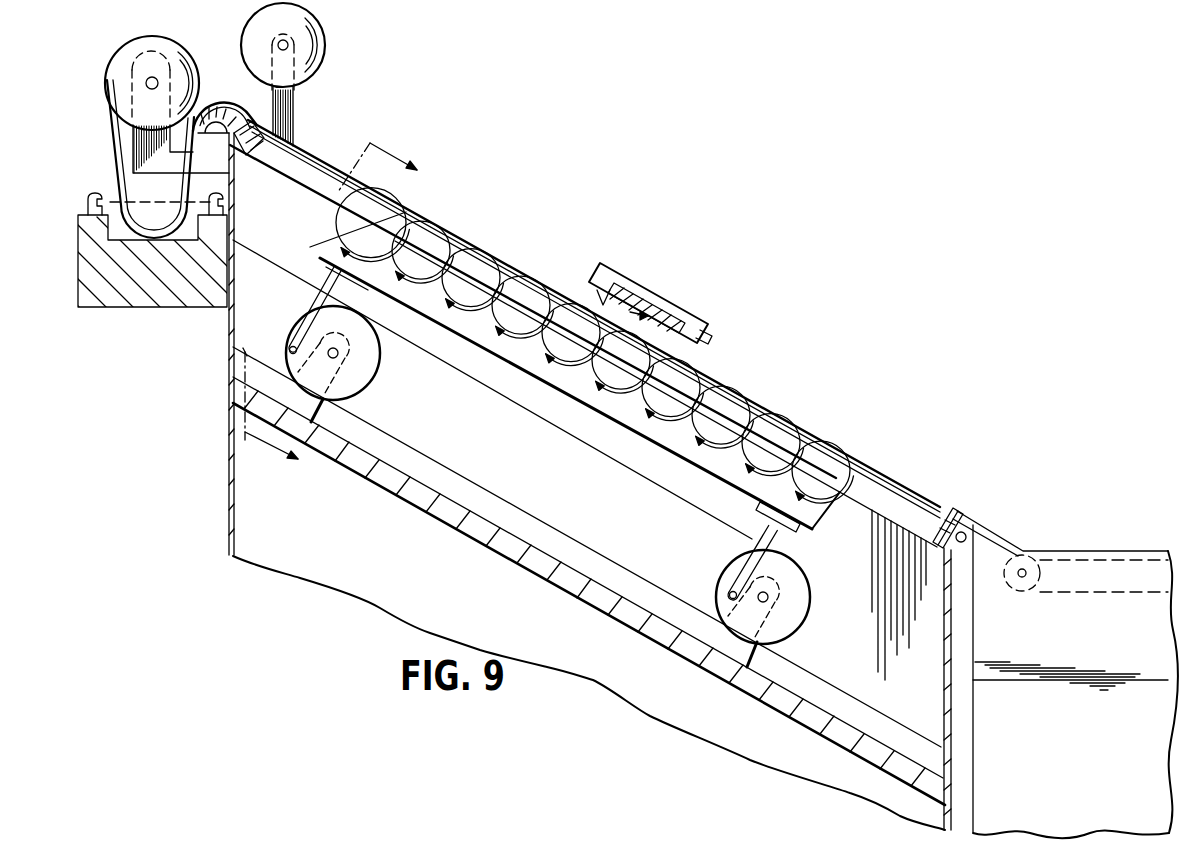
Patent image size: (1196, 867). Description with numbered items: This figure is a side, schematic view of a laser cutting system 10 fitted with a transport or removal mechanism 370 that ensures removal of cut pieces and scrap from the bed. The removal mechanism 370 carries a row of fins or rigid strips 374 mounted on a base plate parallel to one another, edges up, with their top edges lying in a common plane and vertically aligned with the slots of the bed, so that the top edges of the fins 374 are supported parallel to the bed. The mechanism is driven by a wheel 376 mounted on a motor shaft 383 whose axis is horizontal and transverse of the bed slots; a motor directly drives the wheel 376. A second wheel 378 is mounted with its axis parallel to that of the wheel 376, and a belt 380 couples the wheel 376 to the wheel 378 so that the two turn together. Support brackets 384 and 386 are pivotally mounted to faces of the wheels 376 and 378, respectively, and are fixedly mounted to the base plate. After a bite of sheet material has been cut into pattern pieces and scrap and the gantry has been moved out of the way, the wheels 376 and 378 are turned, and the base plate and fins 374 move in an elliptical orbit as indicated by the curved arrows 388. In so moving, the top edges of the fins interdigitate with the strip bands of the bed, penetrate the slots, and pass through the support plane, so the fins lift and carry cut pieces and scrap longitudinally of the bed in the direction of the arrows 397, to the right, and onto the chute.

The laser cutting system 10 is at (307, 138).
The transport or removal mechanism 370 is at (303, 303).
The fins or rigid strips 374 is at (547, 372).
The wheel 376 is at (367, 351).
The wheel 378 is at (792, 597).
The belt 380 is at (594, 448).
The motor shaft 383 is at (337, 356).
The support bracket 384 is at (327, 293).
The support bracket 386 is at (790, 538).
The curved arrows 388 is at (310, 247).
The arrows 397 is at (598, 284).